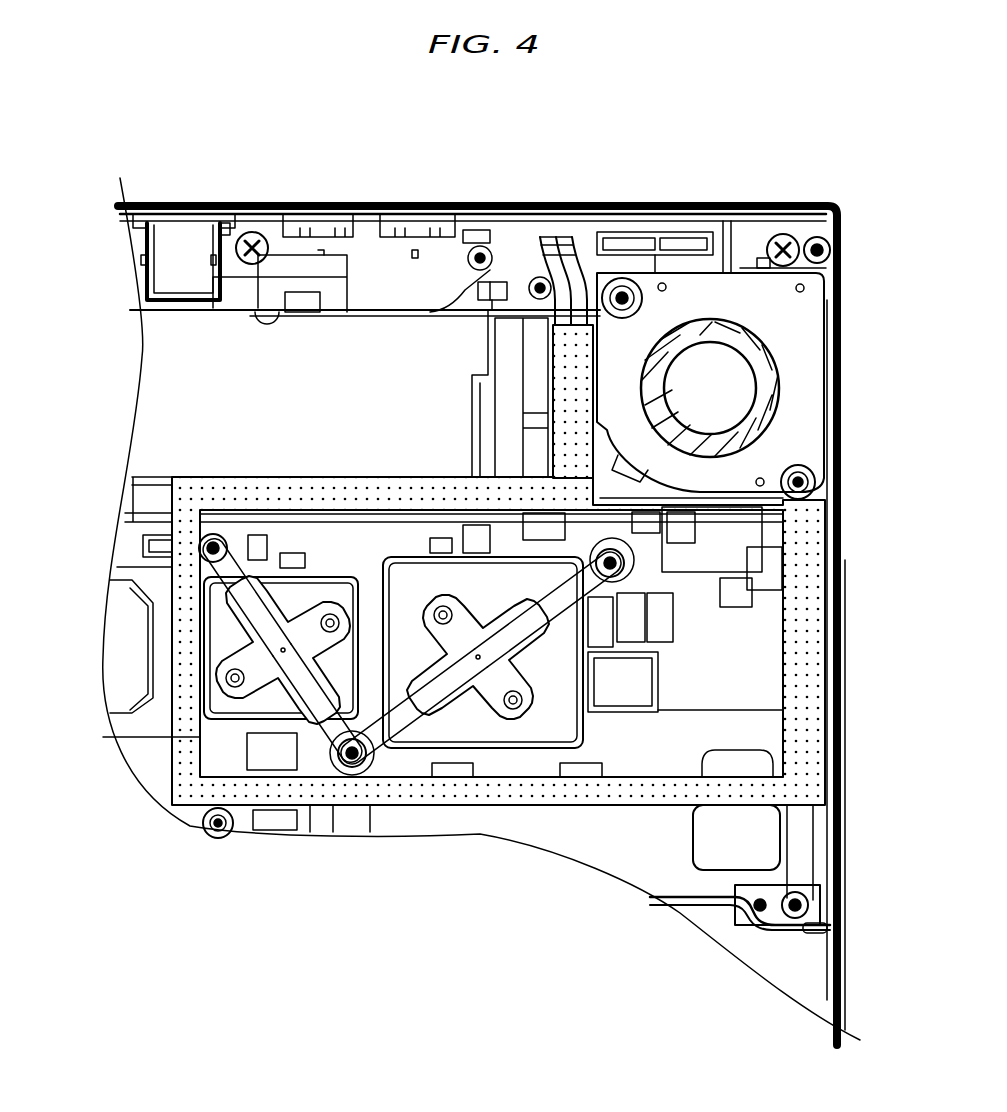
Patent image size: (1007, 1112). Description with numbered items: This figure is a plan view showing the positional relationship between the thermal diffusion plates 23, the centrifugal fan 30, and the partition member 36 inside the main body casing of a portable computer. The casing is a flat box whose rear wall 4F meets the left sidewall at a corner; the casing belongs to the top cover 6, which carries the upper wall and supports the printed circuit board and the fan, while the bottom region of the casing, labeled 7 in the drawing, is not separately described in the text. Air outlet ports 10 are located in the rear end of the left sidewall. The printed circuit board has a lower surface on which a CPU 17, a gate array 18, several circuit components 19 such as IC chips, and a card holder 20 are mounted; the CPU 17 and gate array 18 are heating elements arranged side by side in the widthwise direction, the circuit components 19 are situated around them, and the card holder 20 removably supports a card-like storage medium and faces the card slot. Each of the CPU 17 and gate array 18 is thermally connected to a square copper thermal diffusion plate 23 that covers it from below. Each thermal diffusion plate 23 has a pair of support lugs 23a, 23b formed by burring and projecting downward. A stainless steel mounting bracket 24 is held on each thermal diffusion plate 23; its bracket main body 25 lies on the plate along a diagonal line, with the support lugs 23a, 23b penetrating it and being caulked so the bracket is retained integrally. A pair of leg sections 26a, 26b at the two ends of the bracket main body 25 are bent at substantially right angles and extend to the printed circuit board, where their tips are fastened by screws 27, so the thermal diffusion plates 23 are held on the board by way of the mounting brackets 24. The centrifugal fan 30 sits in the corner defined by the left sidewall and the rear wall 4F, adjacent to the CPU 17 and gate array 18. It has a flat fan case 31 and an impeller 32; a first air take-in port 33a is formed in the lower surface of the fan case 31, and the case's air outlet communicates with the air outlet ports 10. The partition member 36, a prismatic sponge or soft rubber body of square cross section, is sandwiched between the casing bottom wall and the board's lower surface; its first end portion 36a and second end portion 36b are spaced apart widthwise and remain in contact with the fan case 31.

The rear wall 4F is at (548, 206).
The top cover 6 is at (835, 775).
The bottom of casing 7 is at (766, 965).
The air outlet ports 10 is at (700, 683).
The CPU 17 is at (585, 770).
The gate array 18 is at (210, 838).
The circuit components 19 is at (118, 672).
The card holder 20 is at (800, 856).
The thermal diffusion plates 23 is at (275, 728).
The support lug 23a is at (226, 684).
The support lug 23b is at (333, 583).
The mounting bracket 24 is at (290, 592).
The bracket main body 25 is at (270, 637).
The leg section 26a is at (255, 545).
The leg section 26b is at (320, 762).
The screws 27 is at (213, 534).
The centrifugal fan 30 is at (713, 292).
The fan case 31 is at (770, 300).
The impeller 32 is at (772, 364).
The first air take-in port 33a is at (775, 400).
The partition member 36 is at (635, 797).
The first end portion 36a is at (817, 520).
The second end portion 36b is at (565, 340).